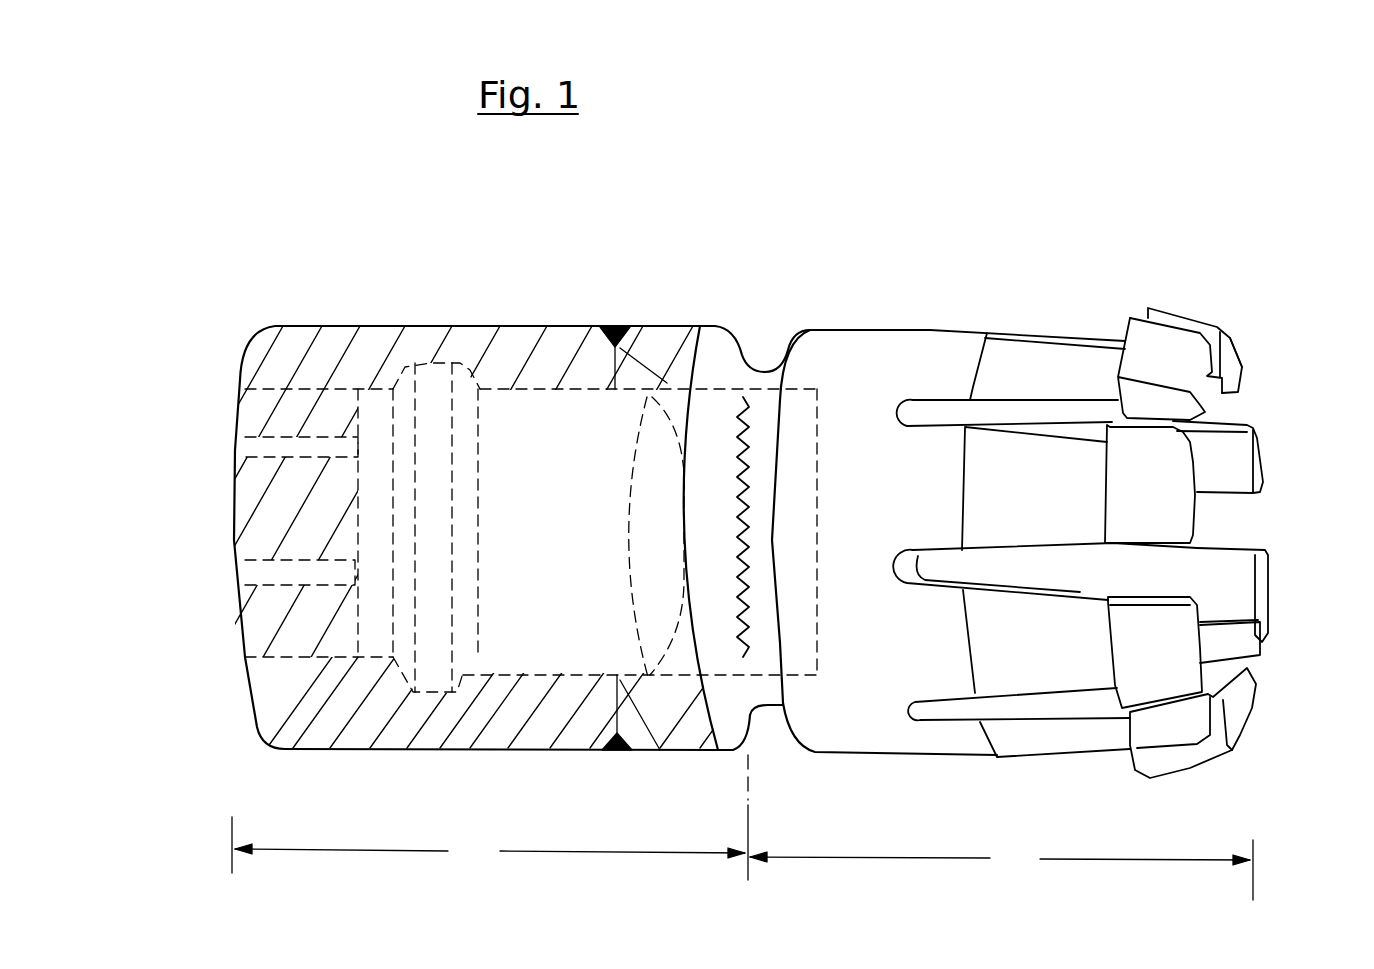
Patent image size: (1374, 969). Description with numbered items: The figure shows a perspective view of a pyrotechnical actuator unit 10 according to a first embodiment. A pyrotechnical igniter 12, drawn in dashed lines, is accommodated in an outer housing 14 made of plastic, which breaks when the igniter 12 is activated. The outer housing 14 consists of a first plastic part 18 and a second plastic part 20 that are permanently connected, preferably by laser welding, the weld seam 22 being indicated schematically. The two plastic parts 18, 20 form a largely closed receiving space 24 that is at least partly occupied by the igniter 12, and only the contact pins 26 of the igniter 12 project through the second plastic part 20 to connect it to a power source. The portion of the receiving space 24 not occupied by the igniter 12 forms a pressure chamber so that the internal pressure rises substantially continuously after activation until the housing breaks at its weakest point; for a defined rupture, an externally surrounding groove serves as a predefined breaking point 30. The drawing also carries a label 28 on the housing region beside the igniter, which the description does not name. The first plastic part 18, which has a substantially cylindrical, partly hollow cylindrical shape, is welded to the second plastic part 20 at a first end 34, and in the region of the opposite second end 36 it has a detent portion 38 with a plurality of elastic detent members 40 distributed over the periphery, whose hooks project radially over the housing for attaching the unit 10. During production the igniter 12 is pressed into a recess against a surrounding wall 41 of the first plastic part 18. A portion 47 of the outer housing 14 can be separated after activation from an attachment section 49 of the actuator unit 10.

The pyrotechnical actuator unit 10 is at (1093, 384).
The pyrotechnical igniter 12 is at (550, 553).
The outer housing 14 is at (1015, 377).
The first plastic part 18 is at (445, 568).
The second plastic part 20 is at (307, 697).
The weld seam 22 is at (385, 725).
The receiving space 24 is at (313, 497).
The contact pins 26 is at (302, 573).
The nut body 28 is at (1024, 580).
The predefined breaking point 30 is at (451, 297).
The first end 34 is at (380, 328).
The second end 36 is at (1252, 365).
The detent portion 38 is at (1195, 276).
The detent members 40 is at (1222, 452).
The surrounding wall 41 is at (401, 303).
The portion 47 is at (490, 817).
The attachment section 49 is at (1001, 870).